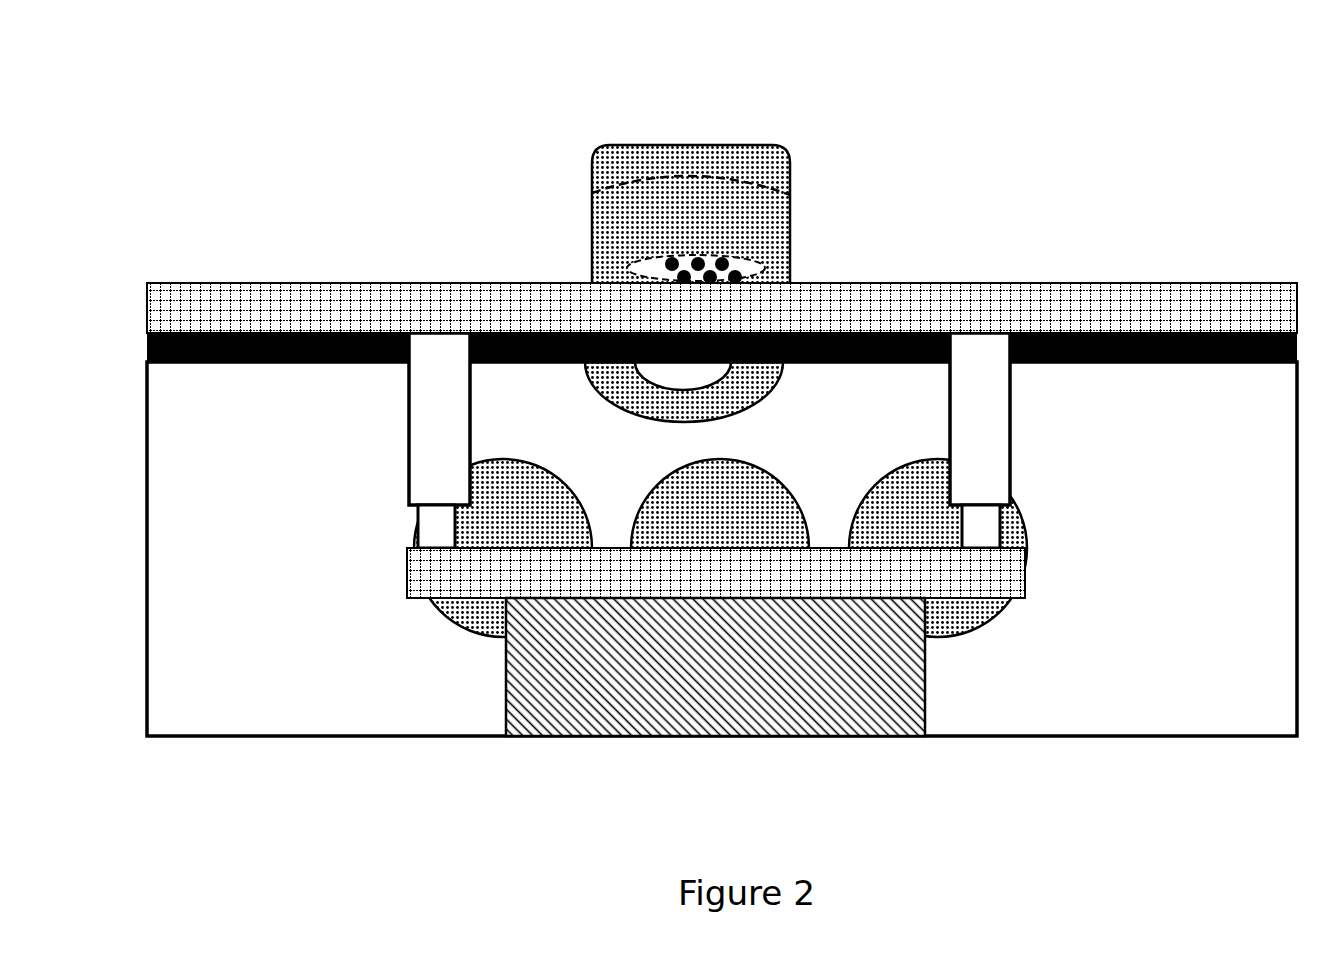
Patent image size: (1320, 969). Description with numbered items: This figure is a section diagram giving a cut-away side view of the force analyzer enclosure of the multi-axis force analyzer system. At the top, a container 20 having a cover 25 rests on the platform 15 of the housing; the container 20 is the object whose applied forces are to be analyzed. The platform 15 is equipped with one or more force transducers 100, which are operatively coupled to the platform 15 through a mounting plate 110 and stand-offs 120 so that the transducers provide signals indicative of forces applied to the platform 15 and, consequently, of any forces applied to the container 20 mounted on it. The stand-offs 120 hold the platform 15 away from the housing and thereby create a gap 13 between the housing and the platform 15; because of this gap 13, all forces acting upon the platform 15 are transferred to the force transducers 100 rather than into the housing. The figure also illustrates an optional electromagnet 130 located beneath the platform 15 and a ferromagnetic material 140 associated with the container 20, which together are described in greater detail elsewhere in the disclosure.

The gap 13 is at (135, 347).
The platform 15 is at (198, 307).
The container 20 is at (768, 219).
The cover 25 is at (631, 166).
The force transducer 100 is at (715, 667).
The mounting plate 110 is at (992, 574).
The stand-offs 120 is at (433, 447).
The electromagnet 130 is at (740, 383).
The ferromagnetic material 140 is at (652, 268).